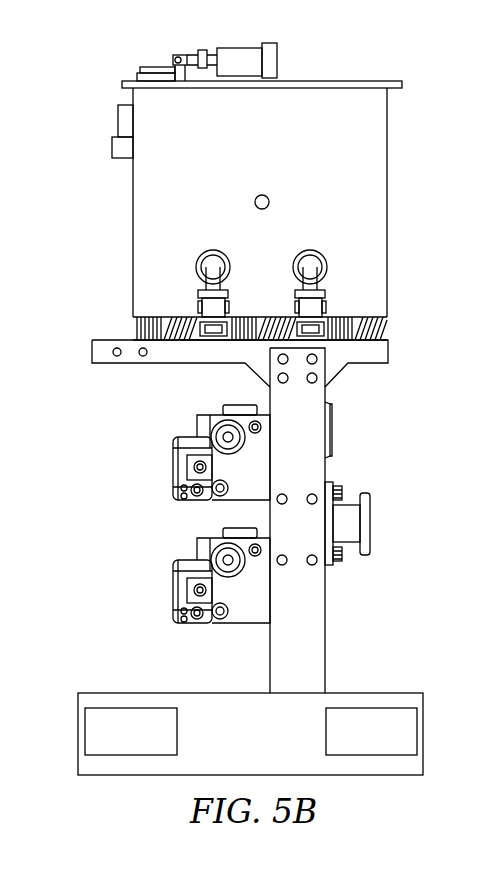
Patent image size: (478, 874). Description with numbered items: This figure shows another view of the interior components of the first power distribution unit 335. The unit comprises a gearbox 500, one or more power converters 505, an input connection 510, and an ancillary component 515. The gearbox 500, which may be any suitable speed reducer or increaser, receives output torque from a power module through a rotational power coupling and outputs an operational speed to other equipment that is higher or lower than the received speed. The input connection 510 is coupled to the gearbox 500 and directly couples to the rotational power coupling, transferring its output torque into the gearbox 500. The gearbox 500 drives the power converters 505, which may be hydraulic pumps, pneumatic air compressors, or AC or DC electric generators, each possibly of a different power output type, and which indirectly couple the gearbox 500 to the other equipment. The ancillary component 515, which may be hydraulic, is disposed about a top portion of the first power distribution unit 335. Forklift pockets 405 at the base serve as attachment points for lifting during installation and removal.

The first power distribution unit 335 is at (362, 42).
The ancillary component 515 is at (387, 134).
The gearbox 500 is at (325, 648).
The power converters 505 is at (173, 457).
The input connection 510 is at (370, 510).
The forklift pockets 405 is at (85, 725).